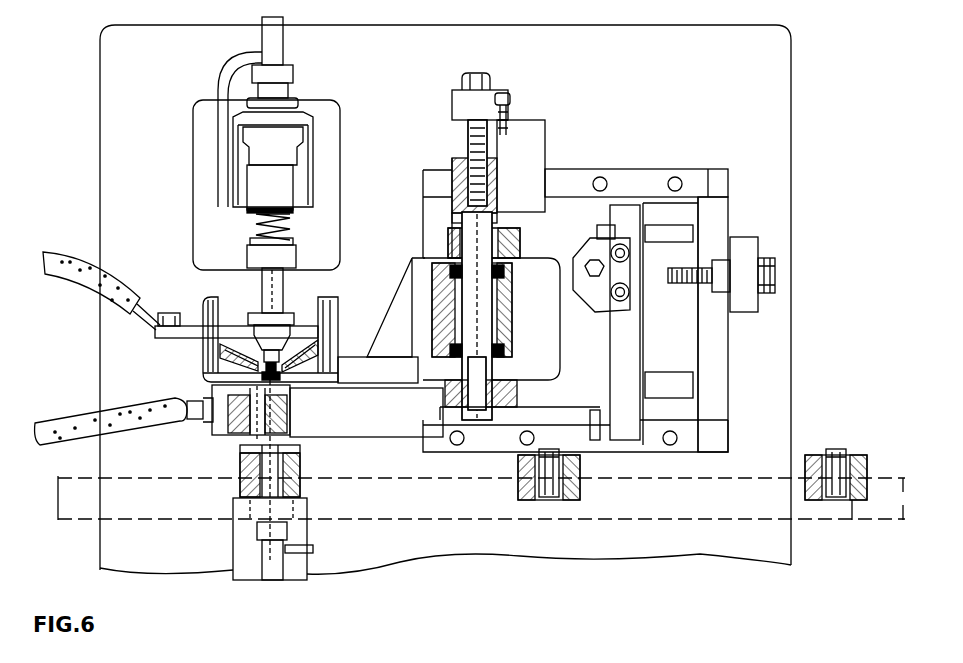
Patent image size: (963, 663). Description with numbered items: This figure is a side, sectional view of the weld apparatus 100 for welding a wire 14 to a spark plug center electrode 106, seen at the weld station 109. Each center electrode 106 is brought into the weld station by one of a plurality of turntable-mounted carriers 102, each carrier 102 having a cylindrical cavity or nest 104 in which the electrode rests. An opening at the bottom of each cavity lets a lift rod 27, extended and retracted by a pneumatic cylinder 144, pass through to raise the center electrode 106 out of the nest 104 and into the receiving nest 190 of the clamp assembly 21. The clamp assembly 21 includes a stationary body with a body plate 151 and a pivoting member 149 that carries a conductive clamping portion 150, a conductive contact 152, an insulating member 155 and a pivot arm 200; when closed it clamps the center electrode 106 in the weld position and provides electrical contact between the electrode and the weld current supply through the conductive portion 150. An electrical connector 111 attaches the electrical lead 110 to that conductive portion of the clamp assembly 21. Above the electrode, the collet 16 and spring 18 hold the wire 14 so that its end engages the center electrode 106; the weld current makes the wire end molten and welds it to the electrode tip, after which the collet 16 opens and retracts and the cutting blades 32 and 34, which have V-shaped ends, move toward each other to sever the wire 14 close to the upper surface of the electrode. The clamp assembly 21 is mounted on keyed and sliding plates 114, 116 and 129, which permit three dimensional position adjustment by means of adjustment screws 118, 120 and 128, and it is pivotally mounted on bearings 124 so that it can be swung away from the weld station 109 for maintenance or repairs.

The wire 14 is at (278, 378).
The collet 16 is at (290, 333).
The spring 18 is at (292, 233).
The clamp assembly 21 is at (330, 450).
The lift rod 27 is at (265, 507).
The cutting blade 32 is at (233, 330).
The cutting blade 34 is at (313, 363).
The apparatus 100 is at (428, 520).
The carrier 102 is at (310, 496).
The nest 104 is at (300, 452).
The center electrode 106 is at (300, 408).
The weld station 109 is at (153, 222).
The electrical lead 110 is at (75, 422).
The electrical connector 111 is at (195, 426).
The keyed and sliding plate 114 is at (676, 213).
The keyed and sliding plate 116 is at (638, 348).
The adjustment screw 118 is at (775, 276).
The adjustment screw 120 is at (596, 262).
The bearings 124 is at (497, 240).
The adjustment screw 128 is at (478, 76).
The keyed and sliding plate 129 is at (458, 168).
The pneumatic cylinder 144 is at (267, 558).
The pivoting member 149 is at (228, 432).
The conductive clamping portion 150 is at (202, 420).
The body plate 151 is at (313, 427).
The conductive contact 152 is at (253, 378).
The insulating member 155 is at (256, 416).
The receiving nest 190 is at (244, 443).
The pivot arm 200 is at (216, 422).